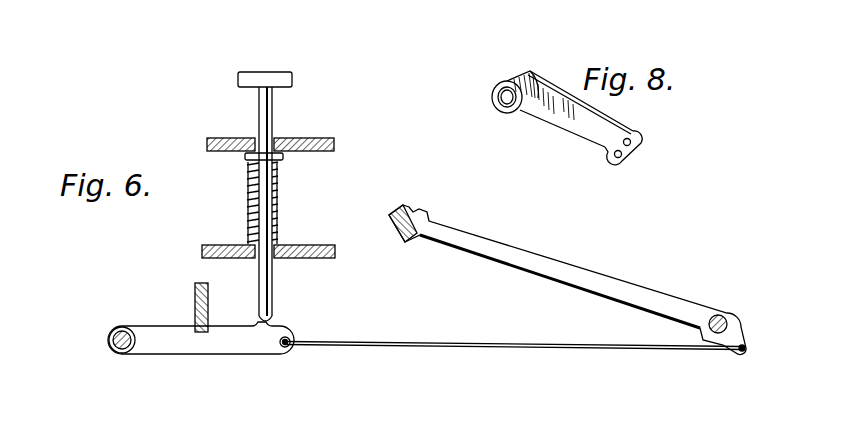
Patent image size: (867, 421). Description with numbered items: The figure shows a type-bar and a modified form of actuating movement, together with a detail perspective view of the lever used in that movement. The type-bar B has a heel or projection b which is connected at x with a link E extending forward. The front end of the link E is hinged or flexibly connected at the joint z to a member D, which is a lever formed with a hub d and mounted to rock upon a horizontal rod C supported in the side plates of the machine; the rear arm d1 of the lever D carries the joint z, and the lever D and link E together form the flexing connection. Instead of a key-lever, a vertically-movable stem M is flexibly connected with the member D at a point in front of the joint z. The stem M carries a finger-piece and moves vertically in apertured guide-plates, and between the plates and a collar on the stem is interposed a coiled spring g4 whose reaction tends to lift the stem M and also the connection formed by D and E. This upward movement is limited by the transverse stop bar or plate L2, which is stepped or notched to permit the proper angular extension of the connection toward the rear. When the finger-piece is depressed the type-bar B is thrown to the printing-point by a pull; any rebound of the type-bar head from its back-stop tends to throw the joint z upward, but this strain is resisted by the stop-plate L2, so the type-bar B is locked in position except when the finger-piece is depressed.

In FIG. 6, the stem M is at (259, 110).
In FIG. 6, the coiled spring g4 is at (281, 217).
In FIG. 6, the stop bar or plate L2 is at (209, 284).
In FIG. 6, the member D is at (201, 338).
In FIG. 8, the member D is at (576, 109).
In FIG. 6, the hub d is at (127, 330).
In FIG. 8, the hub d is at (500, 77).
In FIG. 6, the horizontal rod C is at (108, 333).
In FIG. 6, the rear arm d1 is at (275, 352).
In FIG. 8, the rear arm d1 is at (623, 125).
In FIG. 6, the joint or hinge z is at (289, 339).
In FIG. 6, the link E is at (452, 342).
In FIG. 6, the type-bar B is at (540, 256).
In FIG. 6, the heel or projection b is at (745, 342).
In FIG. 6, the connection point x is at (737, 355).